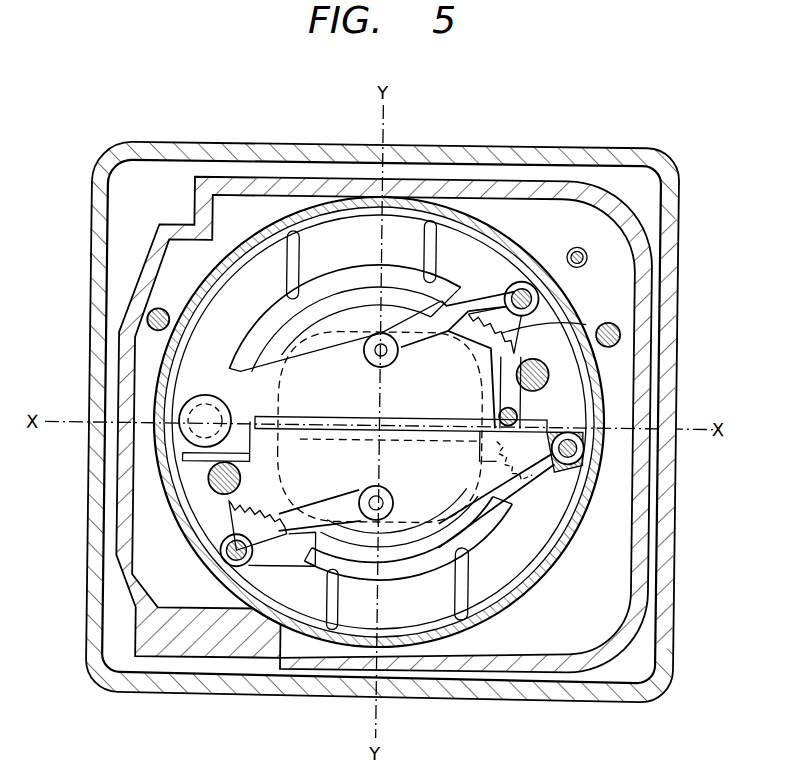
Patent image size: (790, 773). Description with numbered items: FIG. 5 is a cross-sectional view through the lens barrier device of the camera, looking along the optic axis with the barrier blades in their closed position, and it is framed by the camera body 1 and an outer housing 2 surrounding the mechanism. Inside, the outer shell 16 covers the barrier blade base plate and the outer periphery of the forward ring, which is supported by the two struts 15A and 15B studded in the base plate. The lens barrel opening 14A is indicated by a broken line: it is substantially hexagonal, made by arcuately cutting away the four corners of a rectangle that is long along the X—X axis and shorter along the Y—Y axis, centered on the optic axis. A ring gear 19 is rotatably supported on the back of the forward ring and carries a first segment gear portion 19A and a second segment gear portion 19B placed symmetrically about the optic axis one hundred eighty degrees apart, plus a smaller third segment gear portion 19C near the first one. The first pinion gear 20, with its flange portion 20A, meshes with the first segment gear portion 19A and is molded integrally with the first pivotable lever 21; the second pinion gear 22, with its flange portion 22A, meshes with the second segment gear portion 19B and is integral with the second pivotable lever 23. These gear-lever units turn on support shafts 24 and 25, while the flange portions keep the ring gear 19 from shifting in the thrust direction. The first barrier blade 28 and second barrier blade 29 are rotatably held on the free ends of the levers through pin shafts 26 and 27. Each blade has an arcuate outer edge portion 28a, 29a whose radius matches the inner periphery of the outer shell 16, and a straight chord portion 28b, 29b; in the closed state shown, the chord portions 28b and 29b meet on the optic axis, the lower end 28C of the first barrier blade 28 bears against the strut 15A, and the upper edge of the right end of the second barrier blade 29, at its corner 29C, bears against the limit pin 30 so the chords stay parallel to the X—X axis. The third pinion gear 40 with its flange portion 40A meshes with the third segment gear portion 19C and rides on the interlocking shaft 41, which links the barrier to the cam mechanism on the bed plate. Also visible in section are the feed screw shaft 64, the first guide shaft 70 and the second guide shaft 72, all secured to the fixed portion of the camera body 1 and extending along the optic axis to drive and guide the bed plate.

The camera body 1 is at (192, 202).
The casing 2 is at (236, 147).
The lens barrel opening 14A is at (300, 372).
The strut 15A is at (209, 483).
The strut 15B is at (549, 372).
The outer shell 16 is at (525, 600).
The ring gear 19 is at (495, 522).
The first segment gear portion 19A is at (470, 375).
The second segment gear portion 19B is at (268, 492).
The third segment gear portion 19C is at (500, 446).
The first pinion gear 20 is at (568, 320).
The flange portion 20A is at (577, 330).
The first pivotable lever 21 is at (460, 292).
The second pinion gear 22 is at (240, 520).
The flange portion 22A is at (178, 530).
The second pivotable lever 23 is at (290, 573).
The support shaft 24 is at (500, 292).
The support shaft 25 is at (222, 583).
The pin shaft 26 is at (390, 362).
The pin shaft 27 is at (205, 397).
The first barrier blade 28 is at (238, 362).
The outer edge portion 28a is at (350, 323).
The chord portion 28b is at (368, 432).
The lower end 28C is at (185, 459).
The second barrier blade 29 is at (500, 470).
The outer edge portion 29a is at (405, 540).
The chord portion 29b is at (325, 418).
The blade tab 29C is at (528, 430).
The limit pin 30 is at (498, 410).
The third pinion gear 40 is at (520, 470).
The flange portion 40A is at (560, 470).
The interlocking shaft 41 is at (584, 450).
The feed screw shaft 64 is at (575, 245).
The first guide shaft 70 is at (160, 311).
The second guide shaft 72 is at (608, 319).